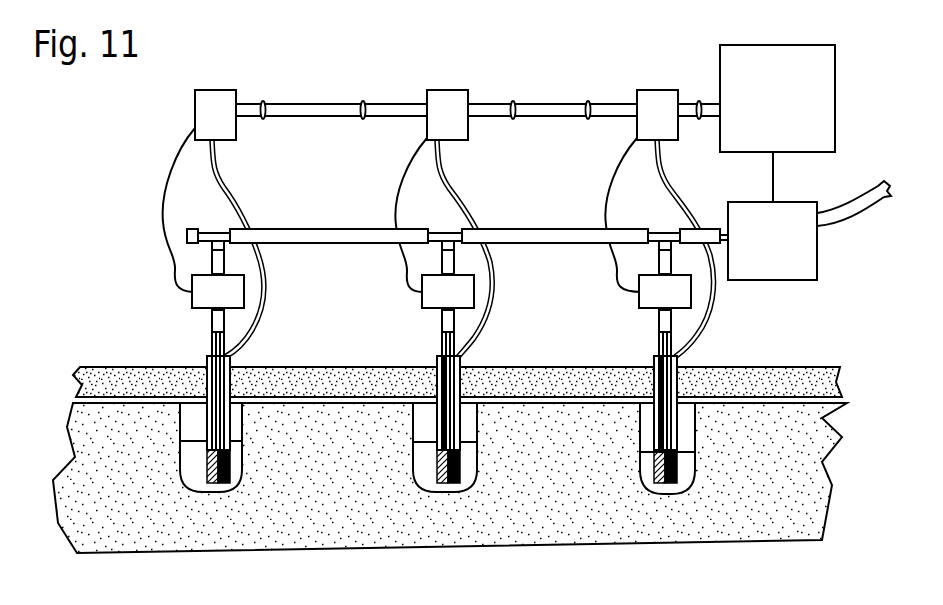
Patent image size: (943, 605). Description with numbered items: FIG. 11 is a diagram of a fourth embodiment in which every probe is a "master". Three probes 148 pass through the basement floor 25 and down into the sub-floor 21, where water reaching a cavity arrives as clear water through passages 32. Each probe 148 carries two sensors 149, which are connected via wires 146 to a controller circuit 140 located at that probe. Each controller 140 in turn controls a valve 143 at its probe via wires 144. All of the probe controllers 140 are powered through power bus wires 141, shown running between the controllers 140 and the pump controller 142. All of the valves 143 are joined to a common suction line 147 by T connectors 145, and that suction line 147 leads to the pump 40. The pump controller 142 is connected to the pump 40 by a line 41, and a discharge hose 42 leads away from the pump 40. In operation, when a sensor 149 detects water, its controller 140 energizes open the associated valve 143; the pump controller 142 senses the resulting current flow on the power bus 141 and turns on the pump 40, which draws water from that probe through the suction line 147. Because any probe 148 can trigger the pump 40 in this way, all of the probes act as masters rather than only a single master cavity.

The sub-floor 21 is at (70, 437).
The basement floor 25 is at (100, 367).
The passages 32 is at (840, 402).
The pump 40 is at (740, 202).
The pump control line 41 is at (773, 185).
The discharge hose 42 is at (860, 203).
The controller circuit 140 is at (195, 110).
The power bus wires 141 is at (692, 105).
The pump controller 142 is at (758, 45).
The valves 143 is at (205, 298).
The wires 144 is at (161, 208).
The T connectors 145 is at (222, 232).
The wires 146 is at (236, 205).
The common suction line 147 is at (543, 223).
The probes 148 is at (213, 483).
The sensors 149 is at (226, 485).